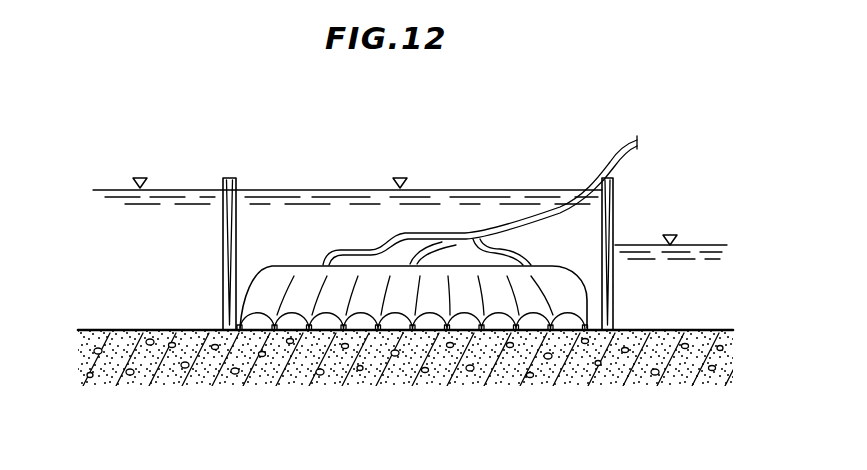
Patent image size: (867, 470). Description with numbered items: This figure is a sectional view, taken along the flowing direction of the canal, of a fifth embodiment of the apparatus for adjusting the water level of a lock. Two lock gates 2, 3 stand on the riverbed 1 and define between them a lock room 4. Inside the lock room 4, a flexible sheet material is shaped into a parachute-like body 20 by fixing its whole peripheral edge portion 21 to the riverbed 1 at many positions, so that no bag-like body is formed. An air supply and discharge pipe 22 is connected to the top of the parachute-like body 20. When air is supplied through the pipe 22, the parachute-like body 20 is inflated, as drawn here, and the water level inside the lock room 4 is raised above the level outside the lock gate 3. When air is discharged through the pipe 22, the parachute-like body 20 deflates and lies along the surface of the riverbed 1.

The riverbed 1 is at (574, 357).
The lock gate 2 is at (229, 176).
The lock gate 3 is at (613, 171).
The lock room 4 is at (462, 179).
The parachute-like body 20 is at (412, 322).
The peripheral edge portion 21 is at (296, 332).
The air supply and discharge pipe 22 is at (583, 176).